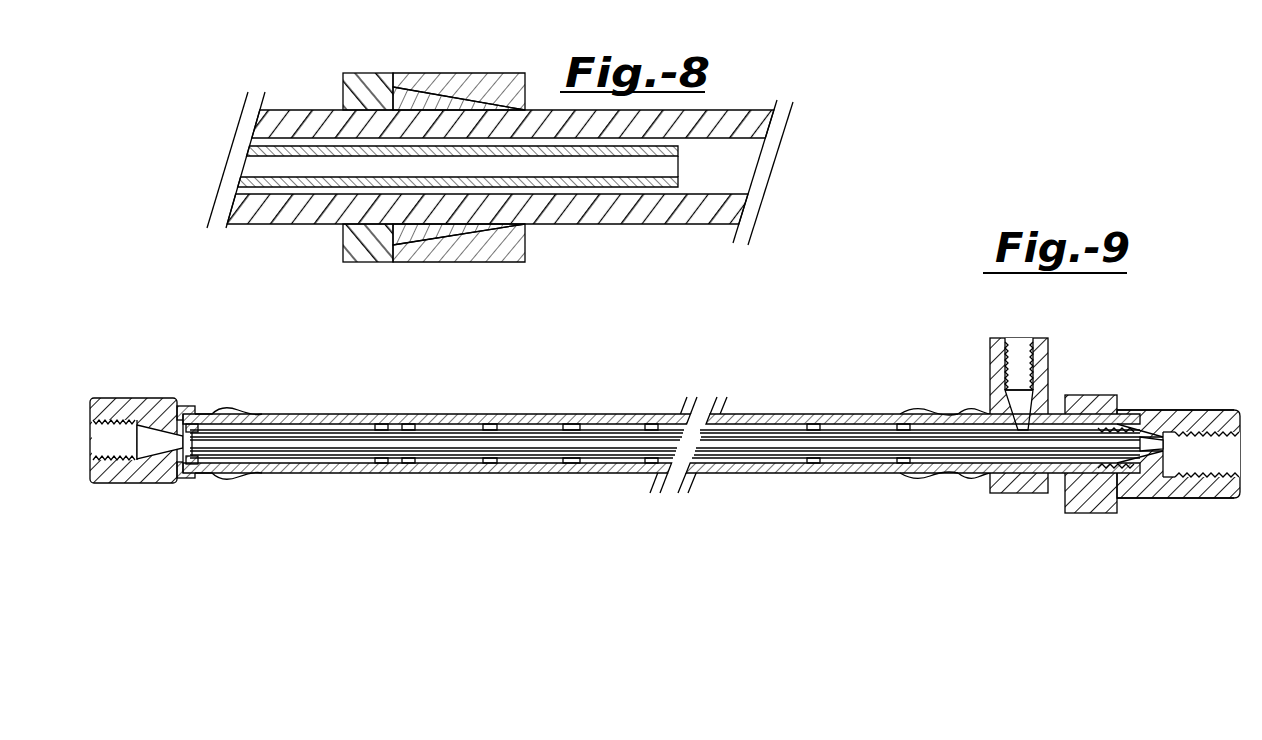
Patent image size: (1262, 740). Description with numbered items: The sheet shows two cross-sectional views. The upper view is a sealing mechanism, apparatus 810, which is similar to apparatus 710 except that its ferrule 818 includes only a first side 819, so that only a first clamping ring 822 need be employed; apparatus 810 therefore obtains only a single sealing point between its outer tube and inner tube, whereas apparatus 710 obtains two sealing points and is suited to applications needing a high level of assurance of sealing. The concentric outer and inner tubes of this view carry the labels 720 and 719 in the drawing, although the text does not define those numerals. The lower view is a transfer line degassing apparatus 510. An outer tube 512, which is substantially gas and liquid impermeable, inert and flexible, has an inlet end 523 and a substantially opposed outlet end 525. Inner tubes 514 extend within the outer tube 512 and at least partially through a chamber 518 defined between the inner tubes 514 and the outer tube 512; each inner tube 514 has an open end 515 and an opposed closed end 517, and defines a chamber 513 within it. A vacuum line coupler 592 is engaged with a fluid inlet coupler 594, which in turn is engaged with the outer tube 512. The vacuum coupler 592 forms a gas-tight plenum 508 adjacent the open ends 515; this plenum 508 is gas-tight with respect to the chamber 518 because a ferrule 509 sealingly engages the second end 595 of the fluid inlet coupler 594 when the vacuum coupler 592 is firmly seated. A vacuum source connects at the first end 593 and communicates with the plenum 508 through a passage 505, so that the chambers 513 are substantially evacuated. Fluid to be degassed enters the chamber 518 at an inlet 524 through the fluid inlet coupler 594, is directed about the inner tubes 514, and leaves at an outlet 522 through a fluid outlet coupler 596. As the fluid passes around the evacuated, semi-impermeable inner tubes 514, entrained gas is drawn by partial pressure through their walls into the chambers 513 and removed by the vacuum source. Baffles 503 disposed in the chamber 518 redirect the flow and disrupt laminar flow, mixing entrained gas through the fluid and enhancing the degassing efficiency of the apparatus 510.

In FIG. 8, the apparatus 810 is at (356, 56).
In FIG. 8, the ferrule 818 is at (355, 262).
In FIG. 8, the first side 819 is at (455, 235).
In FIG. 8, the first clamping ring 822 is at (440, 72).
In FIG. 8, the apparatus 710 is at (905, 0).
In FIG. 8, the inner tube 719 is at (537, 93).
In FIG. 8, the outer tube 720 is at (500, 112).
In FIG. 9, the baffles 503 is at (303, 415).
In FIG. 9, the passage 505 is at (1170, 452).
In FIG. 9, the plenum 508 is at (1195, 410).
In FIG. 9, the ferrule 509 is at (1122, 420).
In FIG. 9, the transfer line apparatus 510 is at (642, 391).
In FIG. 9, the outer tube 512 is at (356, 416).
In FIG. 9, the chambers 513 is at (468, 436).
In FIG. 9, the inner tubes 514 is at (376, 476).
In FIG. 9, the open end 515 is at (1135, 430).
In FIG. 9, the closed end 517 is at (193, 415).
In FIG. 9, the chamber 518 is at (560, 430).
In FIG. 9, the outlet 522 is at (162, 400).
In FIG. 9, the inlet end 523 is at (237, 488).
In FIG. 9, the inlet 524 is at (988, 398).
In FIG. 9, the outlet end 525 is at (954, 490).
In FIG. 9, the vacuum line coupler 592 is at (1085, 513).
In FIG. 9, the first end 593 is at (1202, 475).
In FIG. 9, the fluid inlet coupler 594 is at (1047, 356).
In FIG. 9, the second end 595 is at (1092, 415).
In FIG. 9, the fluid outlet coupler 596 is at (133, 400).